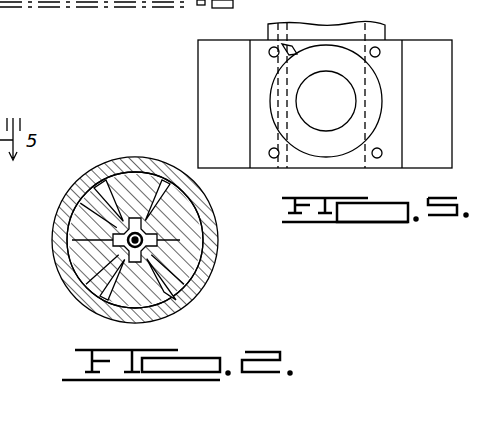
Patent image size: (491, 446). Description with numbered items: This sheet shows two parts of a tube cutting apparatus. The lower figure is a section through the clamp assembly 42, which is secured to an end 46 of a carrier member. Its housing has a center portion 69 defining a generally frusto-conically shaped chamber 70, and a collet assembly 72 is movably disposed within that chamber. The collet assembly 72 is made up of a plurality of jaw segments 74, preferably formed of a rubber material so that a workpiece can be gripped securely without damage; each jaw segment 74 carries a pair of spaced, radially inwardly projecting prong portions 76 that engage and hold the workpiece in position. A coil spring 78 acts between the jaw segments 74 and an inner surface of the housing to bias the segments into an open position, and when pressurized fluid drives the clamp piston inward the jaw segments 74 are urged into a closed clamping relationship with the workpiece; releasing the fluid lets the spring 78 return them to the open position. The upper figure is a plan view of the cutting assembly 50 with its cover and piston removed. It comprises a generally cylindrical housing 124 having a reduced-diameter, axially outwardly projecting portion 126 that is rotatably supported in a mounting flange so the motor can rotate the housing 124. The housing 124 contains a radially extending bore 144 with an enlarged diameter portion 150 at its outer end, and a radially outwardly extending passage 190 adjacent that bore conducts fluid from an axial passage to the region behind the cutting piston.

In FIG. 2, the clamp assembly 42 is at (89, 158).
In FIG. 5, the end of carrier member 46 is at (200, 5).
In FIG. 5, the cutting assembly 50 is at (188, 116).
In FIG. 2, the center portion 69 is at (168, 172).
In FIG. 2, the chamber 70 is at (190, 223).
In FIG. 2, the collet assembly 72 is at (188, 206).
In FIG. 2, the jaw segments 74 is at (136, 183).
In FIG. 2, the prong portions 76 is at (124, 260).
In FIG. 2, the coil spring 78 is at (116, 266).
In FIG. 5, the housing 124 is at (198, 96).
In FIG. 5, the axially outwardly projecting portion 126 is at (384, 25).
In FIG. 5, the radially extending bore 144 is at (322, 131).
In FIG. 5, the enlarged diameter portion 150 is at (278, 90).
In FIG. 5, the radially outwardly extending passage 190 is at (268, 48).